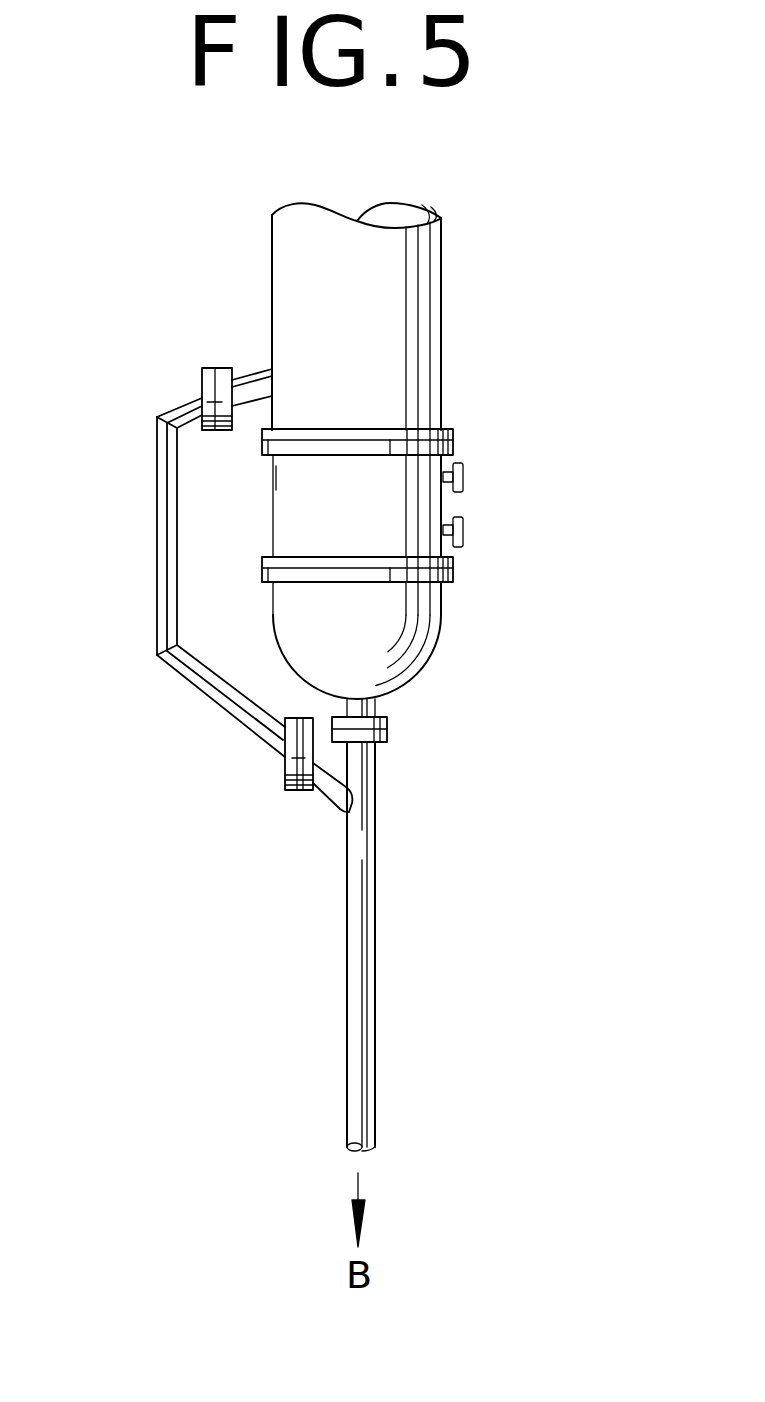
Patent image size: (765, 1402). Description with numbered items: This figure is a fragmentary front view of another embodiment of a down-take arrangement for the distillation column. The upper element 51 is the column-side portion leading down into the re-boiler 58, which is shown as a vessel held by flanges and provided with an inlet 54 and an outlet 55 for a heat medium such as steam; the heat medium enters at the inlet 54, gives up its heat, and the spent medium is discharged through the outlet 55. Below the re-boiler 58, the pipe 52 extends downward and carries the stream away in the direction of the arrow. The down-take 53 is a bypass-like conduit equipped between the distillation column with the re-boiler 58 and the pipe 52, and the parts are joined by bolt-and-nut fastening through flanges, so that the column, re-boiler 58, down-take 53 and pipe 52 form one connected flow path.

The cylindrical tube 51 is at (282, 282).
The pipe 52 is at (368, 950).
The down-take 53 is at (162, 530).
The inlet 54 is at (467, 478).
The outlet 55 is at (467, 535).
The re-boiler 58 is at (293, 510).